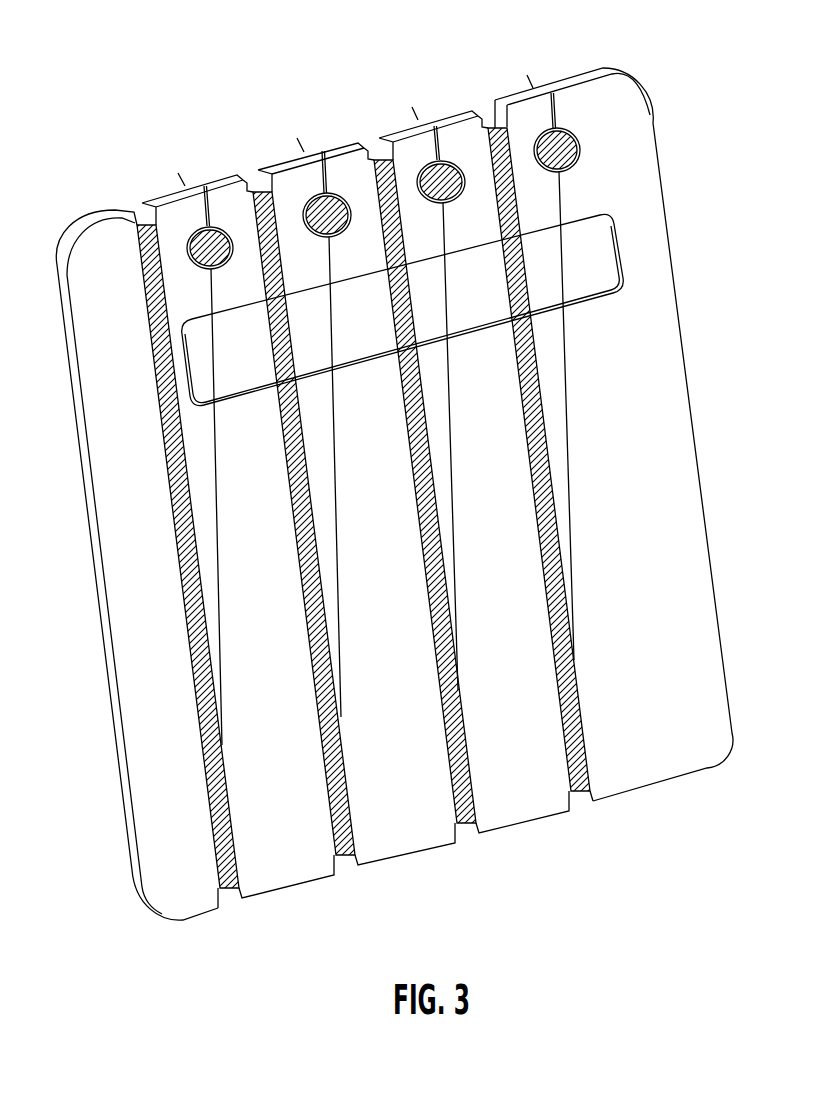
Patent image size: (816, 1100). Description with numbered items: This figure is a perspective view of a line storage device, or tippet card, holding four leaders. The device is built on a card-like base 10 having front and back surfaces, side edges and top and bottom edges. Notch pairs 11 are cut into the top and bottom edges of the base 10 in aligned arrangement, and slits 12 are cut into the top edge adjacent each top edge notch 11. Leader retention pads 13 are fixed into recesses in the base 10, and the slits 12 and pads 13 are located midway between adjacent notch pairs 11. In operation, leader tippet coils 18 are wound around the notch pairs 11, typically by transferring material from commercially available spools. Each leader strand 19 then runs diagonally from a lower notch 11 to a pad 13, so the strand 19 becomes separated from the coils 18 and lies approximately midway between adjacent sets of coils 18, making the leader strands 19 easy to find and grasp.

The base 10 is at (135, 585).
The notch pairs 11 is at (135, 216).
The slits 12 is at (317, 157).
The leader retention pads 13 is at (453, 175).
The leader coils 18 is at (503, 130).
The leader strand 19 is at (562, 187).